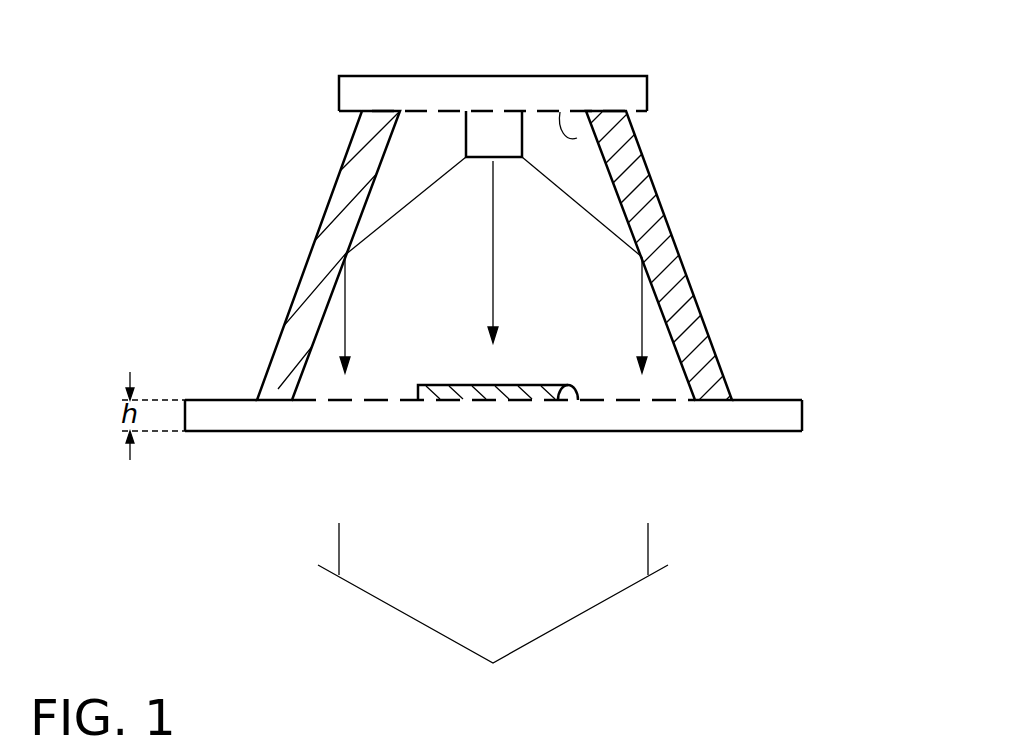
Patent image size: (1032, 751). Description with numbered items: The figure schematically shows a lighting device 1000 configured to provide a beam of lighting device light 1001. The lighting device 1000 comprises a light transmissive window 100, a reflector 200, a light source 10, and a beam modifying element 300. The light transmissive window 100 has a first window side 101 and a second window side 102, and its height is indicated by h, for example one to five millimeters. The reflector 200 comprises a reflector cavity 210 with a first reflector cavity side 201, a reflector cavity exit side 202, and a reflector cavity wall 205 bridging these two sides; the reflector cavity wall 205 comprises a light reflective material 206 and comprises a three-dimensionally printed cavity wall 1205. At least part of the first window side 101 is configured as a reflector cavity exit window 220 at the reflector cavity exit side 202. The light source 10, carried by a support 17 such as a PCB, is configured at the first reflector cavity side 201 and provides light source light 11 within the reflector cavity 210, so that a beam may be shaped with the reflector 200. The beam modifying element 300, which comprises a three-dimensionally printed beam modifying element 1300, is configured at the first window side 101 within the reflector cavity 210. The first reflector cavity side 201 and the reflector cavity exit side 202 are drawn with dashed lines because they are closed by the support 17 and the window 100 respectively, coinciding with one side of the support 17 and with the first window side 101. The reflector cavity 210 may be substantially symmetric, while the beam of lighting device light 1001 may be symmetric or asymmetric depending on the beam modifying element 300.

The lighting device 1000 is at (178, 56).
The support 17 is at (372, 88).
The light source 10 is at (490, 118).
The first reflector cavity side 201 is at (577, 138).
The reflector 200 is at (703, 158).
The reflector cavity wall 205 is at (480, 255).
The 3D-printed cavity wall 1205 is at (290, 330).
The light reflective material 206 is at (310, 272).
The light source light 11 is at (493, 295).
The beam modifying element 300 is at (505, 329).
The 3D-printed beam modifying element 1300 is at (531, 357).
The reflector cavity exit side 202 is at (575, 392).
The light transmissive window 100 is at (547, 414).
The first window side 101 is at (237, 400).
The second window side 102 is at (755, 431).
The reflector cavity 210 is at (396, 386).
The reflector cavity exit window 220 is at (298, 460).
The lighting device light 1001 is at (563, 613).